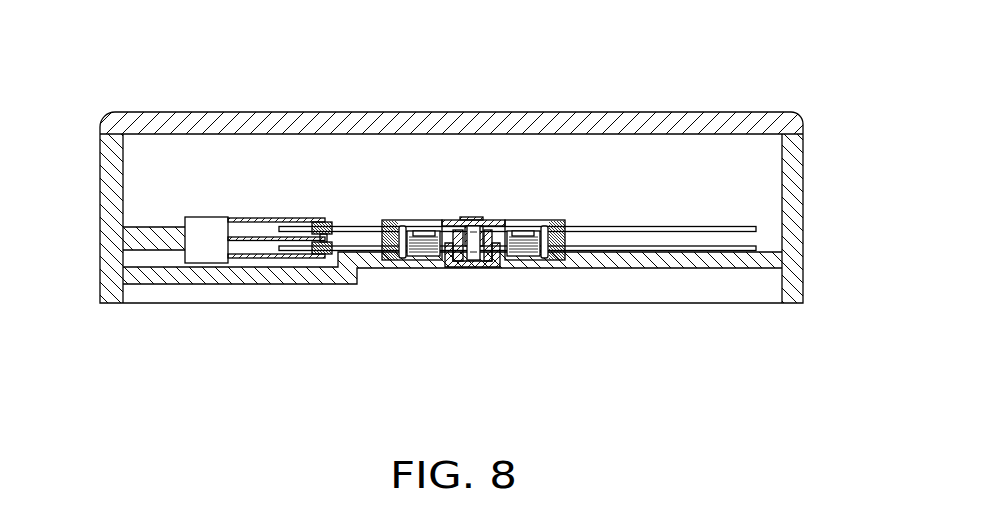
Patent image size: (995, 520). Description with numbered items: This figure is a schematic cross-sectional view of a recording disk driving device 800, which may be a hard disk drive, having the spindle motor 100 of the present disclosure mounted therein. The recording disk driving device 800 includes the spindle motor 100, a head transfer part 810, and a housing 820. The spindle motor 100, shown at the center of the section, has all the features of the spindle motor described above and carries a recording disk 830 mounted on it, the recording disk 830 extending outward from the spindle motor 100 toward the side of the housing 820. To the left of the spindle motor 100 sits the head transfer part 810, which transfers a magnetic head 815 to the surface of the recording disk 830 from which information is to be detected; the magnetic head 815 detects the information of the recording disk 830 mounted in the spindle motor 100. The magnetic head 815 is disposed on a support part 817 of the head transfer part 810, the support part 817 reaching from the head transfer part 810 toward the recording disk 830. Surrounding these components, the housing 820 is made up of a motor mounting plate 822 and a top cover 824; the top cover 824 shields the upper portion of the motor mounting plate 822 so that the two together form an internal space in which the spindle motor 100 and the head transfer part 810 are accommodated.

The recording disk driving device 800 is at (472, 36).
The housing 820 is at (99, 186).
The top cover 824 is at (791, 122).
The motor mounting plate 822 is at (792, 282).
The head transfer part 810 is at (203, 264).
The support part 817 is at (267, 259).
The magnetic head 815 is at (323, 254).
The recording disk 830 is at (705, 232).
The spindle motor 100 is at (548, 218).